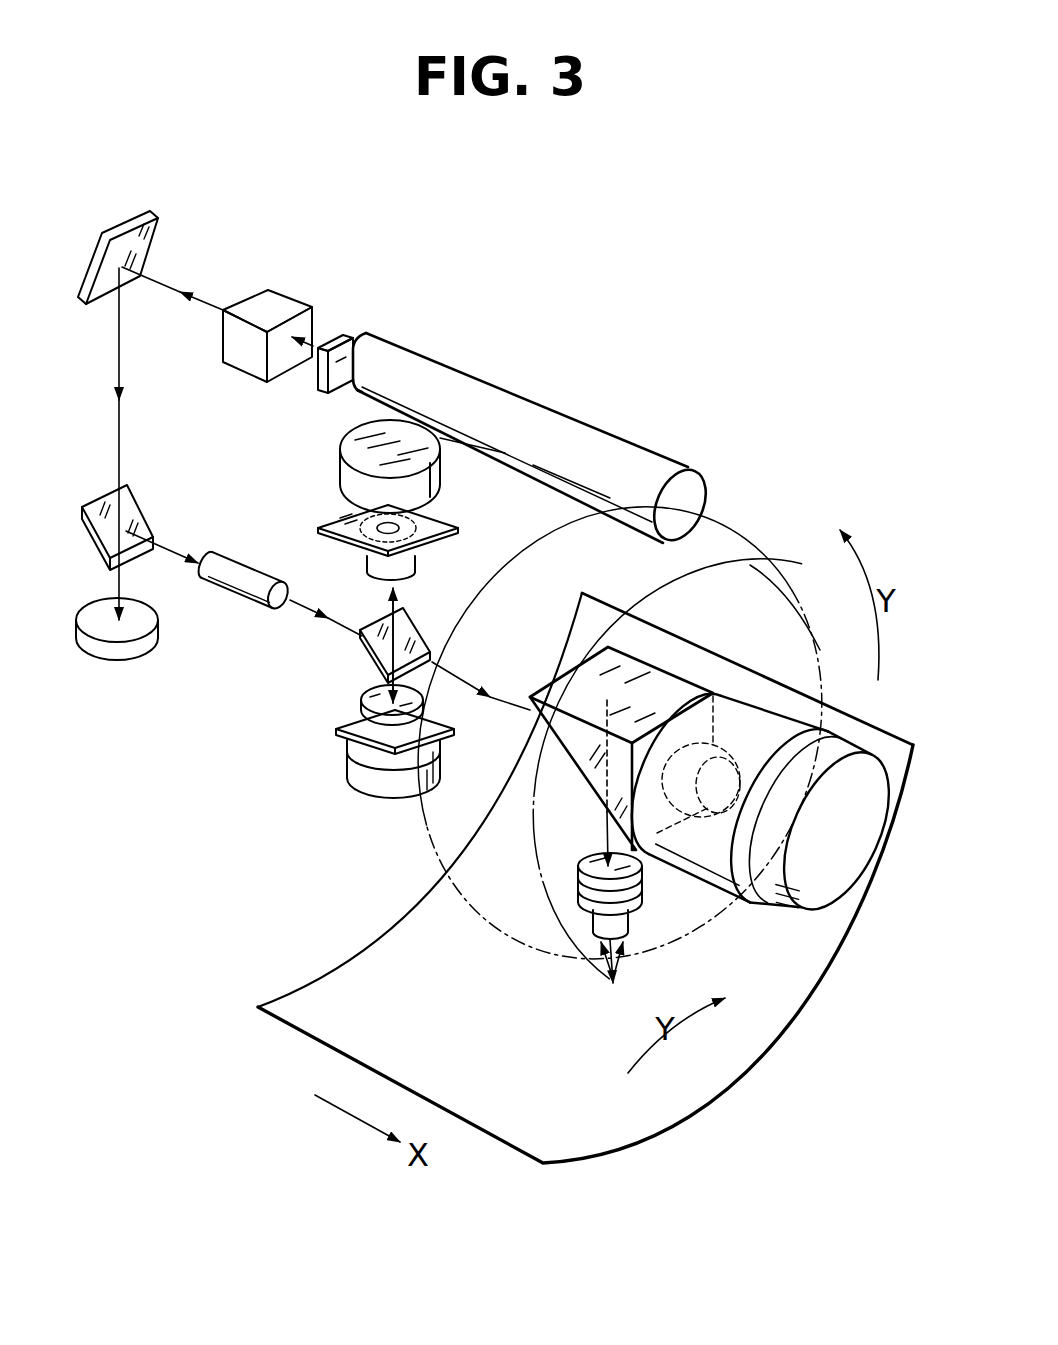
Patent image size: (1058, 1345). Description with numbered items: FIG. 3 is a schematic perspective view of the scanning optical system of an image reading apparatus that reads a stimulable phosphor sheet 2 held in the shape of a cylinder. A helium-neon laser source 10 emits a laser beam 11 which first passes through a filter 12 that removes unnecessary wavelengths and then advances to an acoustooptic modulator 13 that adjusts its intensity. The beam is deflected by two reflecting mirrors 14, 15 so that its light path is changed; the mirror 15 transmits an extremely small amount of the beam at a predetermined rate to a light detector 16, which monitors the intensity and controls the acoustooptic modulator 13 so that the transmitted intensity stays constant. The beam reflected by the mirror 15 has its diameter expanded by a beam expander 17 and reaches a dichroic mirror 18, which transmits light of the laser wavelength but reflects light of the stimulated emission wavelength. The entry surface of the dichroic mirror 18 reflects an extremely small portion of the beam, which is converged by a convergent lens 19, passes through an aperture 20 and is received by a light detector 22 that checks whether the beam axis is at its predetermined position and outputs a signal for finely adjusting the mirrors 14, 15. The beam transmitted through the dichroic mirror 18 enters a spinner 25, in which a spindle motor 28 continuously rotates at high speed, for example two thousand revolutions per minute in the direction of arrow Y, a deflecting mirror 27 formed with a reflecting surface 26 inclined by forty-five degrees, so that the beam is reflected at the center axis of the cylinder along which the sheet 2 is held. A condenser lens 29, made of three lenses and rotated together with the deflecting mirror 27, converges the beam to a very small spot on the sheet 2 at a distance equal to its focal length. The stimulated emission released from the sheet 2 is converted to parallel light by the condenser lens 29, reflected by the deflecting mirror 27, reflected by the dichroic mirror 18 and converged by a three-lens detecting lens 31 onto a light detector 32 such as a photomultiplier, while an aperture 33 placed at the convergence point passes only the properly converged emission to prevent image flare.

The stimulable phosphor sheet 2 is at (677, 1100).
The helium-neon laser source 10 is at (538, 405).
The laser beam 11 is at (322, 342).
The filter 12 is at (354, 340).
The acoustooptic modulator 13 is at (272, 296).
The reflecting mirror 14 is at (138, 214).
The reflecting mirror 15 is at (95, 500).
The light detector 16 is at (150, 645).
The beam expander 17 is at (232, 557).
The dichroic mirror 18 is at (410, 622).
The convergent lens 19 is at (365, 692).
The aperture 20 is at (340, 722).
The light detector 22 is at (348, 778).
The spinner 25 is at (792, 583).
The reflecting surface 26 is at (582, 787).
The deflecting mirror 27 is at (672, 680).
The spindle motor 28 is at (800, 878).
The condenser lens 29 is at (575, 920).
The detecting lens 31 is at (367, 568).
The light detector 32 is at (340, 452).
The aperture 33 is at (318, 528).